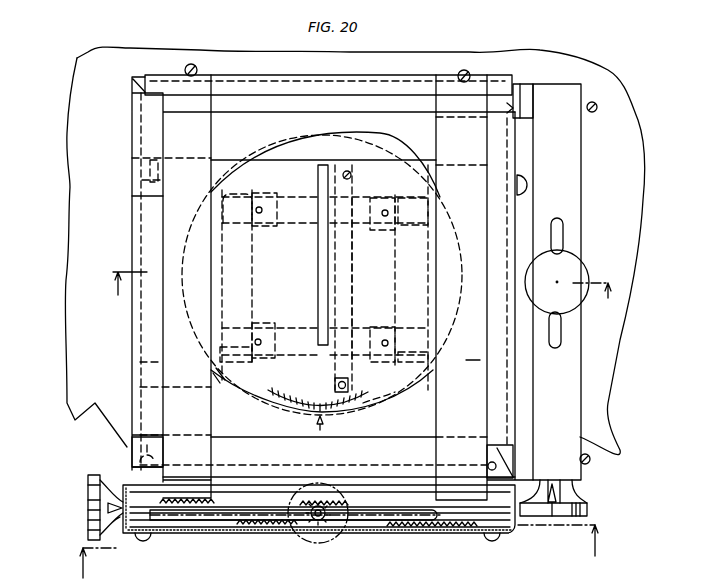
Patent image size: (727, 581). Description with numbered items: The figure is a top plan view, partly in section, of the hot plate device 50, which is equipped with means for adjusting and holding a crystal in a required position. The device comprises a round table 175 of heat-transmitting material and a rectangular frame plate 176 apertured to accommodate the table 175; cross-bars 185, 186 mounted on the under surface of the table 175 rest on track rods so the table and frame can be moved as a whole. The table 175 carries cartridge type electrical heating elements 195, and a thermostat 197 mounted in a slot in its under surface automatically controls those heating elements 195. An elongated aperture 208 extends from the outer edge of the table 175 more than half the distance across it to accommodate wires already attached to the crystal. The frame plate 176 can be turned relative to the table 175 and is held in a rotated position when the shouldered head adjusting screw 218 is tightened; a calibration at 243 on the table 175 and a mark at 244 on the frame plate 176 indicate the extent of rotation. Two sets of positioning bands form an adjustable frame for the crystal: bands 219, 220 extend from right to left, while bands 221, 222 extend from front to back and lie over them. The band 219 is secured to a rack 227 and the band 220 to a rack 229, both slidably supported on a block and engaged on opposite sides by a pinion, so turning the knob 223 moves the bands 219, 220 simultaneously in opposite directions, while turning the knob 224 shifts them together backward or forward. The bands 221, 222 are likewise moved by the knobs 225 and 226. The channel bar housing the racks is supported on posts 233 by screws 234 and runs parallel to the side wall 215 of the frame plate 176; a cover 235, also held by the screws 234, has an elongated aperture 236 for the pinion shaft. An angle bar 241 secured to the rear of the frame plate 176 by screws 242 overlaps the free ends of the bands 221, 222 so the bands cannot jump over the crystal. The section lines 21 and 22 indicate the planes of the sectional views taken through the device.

The hot plate device 50 is at (130, 193).
The round table 175 is at (260, 303).
The frame plate 176 is at (128, 442).
The cross-bar 185 is at (292, 352).
The cross-bar 186 is at (315, 255).
The electrical heating elements 195 is at (253, 248).
The thermostat 197 is at (352, 248).
The elongated aperture 208 is at (325, 157).
The side wall 215 is at (523, 200).
The shouldered head adjusting screw 218 is at (155, 160).
The band 219 is at (430, 130).
The band 220 is at (377, 435).
The band 221 is at (480, 360).
The band 222 is at (160, 205).
The knob 223 is at (577, 275).
The knob 224 is at (587, 508).
The knob 225 is at (330, 540).
The knob 226 is at (88, 497).
The rack 227 is at (415, 530).
The rack 229 is at (225, 498).
The posts 233 is at (523, 467).
The screws 234 is at (590, 458).
The cover 235 is at (590, 378).
The elongated aperture 236 is at (560, 237).
The angle bar 241 is at (403, 90).
The screws 242 is at (470, 72).
The calibration 243 is at (363, 407).
The mark 244 is at (315, 423).
The section line 21 is at (341, 553).
The section line 22 is at (355, 293).